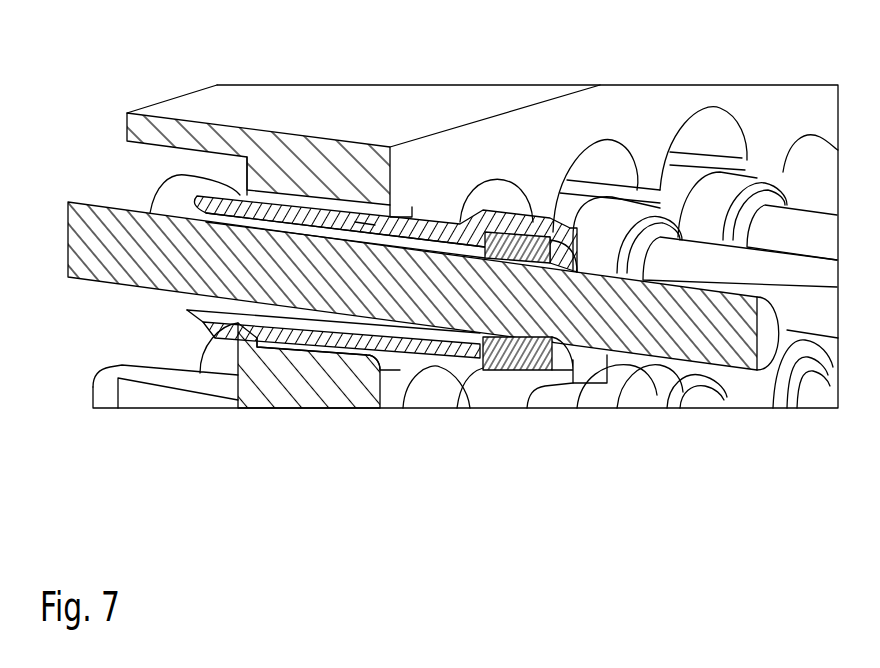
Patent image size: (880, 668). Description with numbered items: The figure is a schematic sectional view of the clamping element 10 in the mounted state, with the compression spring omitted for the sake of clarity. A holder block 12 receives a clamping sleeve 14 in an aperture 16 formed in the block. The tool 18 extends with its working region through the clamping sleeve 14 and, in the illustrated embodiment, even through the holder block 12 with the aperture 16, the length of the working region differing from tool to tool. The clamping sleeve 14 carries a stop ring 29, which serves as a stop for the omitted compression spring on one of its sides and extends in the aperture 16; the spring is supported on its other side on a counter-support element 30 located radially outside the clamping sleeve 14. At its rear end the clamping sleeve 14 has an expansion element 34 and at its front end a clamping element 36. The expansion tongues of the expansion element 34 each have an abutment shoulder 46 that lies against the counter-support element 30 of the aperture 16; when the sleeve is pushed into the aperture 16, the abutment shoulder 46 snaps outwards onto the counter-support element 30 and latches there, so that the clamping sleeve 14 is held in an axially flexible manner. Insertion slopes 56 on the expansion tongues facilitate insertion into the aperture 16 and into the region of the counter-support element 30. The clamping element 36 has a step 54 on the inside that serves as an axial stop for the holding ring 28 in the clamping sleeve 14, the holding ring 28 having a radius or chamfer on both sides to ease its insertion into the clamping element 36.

The clamping element 10 is at (137, 495).
The holder block 12 is at (331, 100).
The clamping sleeve 14 is at (413, 222).
The aperture 16 is at (633, 157).
The tool 18 is at (658, 333).
The holding ring 28 is at (537, 370).
The stop ring 29 is at (372, 218).
The counter-support element 30 is at (258, 195).
The expansion element 34 is at (308, 334).
The clamping element 36 is at (506, 388).
The abutment shoulder 46 is at (242, 395).
The step 54 is at (463, 395).
The insertion slopes 56 is at (183, 327).